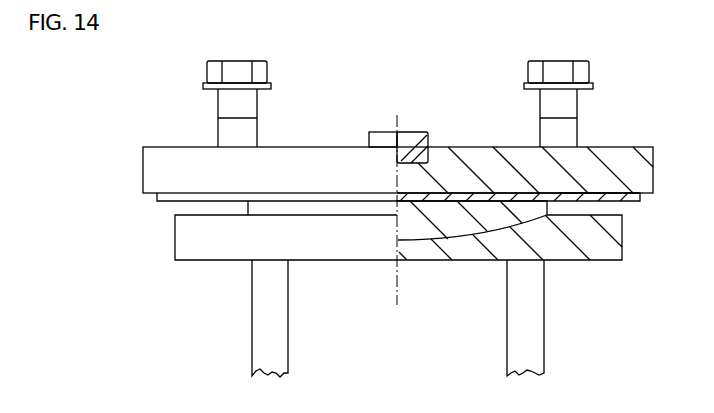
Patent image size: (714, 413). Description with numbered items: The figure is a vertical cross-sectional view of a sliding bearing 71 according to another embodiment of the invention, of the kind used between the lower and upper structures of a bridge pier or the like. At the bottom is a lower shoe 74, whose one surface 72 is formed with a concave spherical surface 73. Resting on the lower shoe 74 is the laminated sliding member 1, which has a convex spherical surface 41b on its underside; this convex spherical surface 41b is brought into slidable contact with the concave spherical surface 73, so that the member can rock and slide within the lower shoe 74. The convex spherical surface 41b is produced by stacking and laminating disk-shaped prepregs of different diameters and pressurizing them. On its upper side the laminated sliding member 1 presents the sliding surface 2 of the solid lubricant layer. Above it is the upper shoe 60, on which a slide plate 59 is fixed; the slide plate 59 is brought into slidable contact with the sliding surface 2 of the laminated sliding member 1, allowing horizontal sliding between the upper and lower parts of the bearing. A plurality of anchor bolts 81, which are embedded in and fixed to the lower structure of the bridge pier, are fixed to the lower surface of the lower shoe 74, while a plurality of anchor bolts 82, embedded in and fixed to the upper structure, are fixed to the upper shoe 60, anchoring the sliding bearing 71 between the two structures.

The laminated sliding member 1 is at (487, 212).
The sliding surface 2 is at (462, 197).
The convex spherical other surface 41b is at (425, 241).
The slide plate 59 is at (583, 198).
The upper shoe 60 is at (315, 160).
The sliding bearing 71 is at (173, 142).
The one surface 72 is at (192, 213).
The concave spherical surface 73 is at (460, 231).
The lower shoe 74 is at (212, 247).
The anchor bolts 81 is at (255, 327).
The anchor bolts 82 is at (238, 100).